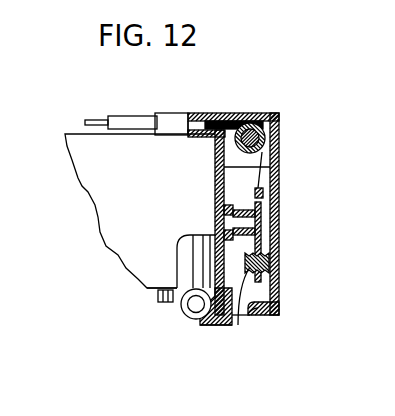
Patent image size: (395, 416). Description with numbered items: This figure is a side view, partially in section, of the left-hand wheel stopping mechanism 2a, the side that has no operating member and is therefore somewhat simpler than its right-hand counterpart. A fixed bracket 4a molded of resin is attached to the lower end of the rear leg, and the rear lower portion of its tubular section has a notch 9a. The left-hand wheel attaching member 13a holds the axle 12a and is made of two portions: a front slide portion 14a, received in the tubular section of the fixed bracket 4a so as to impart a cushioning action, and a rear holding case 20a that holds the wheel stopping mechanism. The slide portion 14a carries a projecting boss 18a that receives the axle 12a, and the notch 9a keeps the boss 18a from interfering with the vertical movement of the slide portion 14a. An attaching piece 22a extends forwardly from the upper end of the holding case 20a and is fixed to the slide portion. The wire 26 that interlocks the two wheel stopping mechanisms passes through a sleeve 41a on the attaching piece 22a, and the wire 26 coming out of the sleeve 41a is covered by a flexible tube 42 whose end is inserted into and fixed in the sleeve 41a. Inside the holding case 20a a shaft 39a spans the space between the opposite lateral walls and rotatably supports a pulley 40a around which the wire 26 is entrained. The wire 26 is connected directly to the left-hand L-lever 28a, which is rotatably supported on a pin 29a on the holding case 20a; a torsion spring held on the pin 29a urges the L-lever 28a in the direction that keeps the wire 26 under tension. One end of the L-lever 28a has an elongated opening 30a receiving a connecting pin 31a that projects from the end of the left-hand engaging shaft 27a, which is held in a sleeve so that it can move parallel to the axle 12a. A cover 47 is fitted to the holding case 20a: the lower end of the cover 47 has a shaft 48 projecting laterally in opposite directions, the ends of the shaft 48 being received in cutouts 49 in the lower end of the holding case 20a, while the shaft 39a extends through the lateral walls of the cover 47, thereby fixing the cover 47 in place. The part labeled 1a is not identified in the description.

The mounting portion 1a is at (151, 315).
The left-hand wheel stopping mechanism 2a is at (291, 245).
The fixed bracket 4a is at (82, 200).
The notch 9a is at (177, 241).
The axle 12a is at (194, 307).
The left-hand wheel attaching member 13a is at (218, 340).
The slide portion 14a is at (167, 303).
The boss 18a is at (206, 325).
The holding case 20a is at (215, 168).
The attaching piece 22a is at (189, 131).
The wire 26 is at (92, 118).
The left-hand engaging shaft 27a is at (262, 262).
The left-hand L-lever 28a is at (262, 234).
The pin 29a is at (264, 213).
The elongated opening 30a is at (269, 258).
The connecting pin 31a is at (239, 326).
The shaft 39a is at (262, 114).
The pulley 40a is at (233, 113).
The sleeve 41a is at (167, 120).
The flexible tube 42 is at (130, 116).
The cover 47 is at (279, 132).
The shaft 48 is at (265, 305).
The cutouts 49 is at (250, 308).